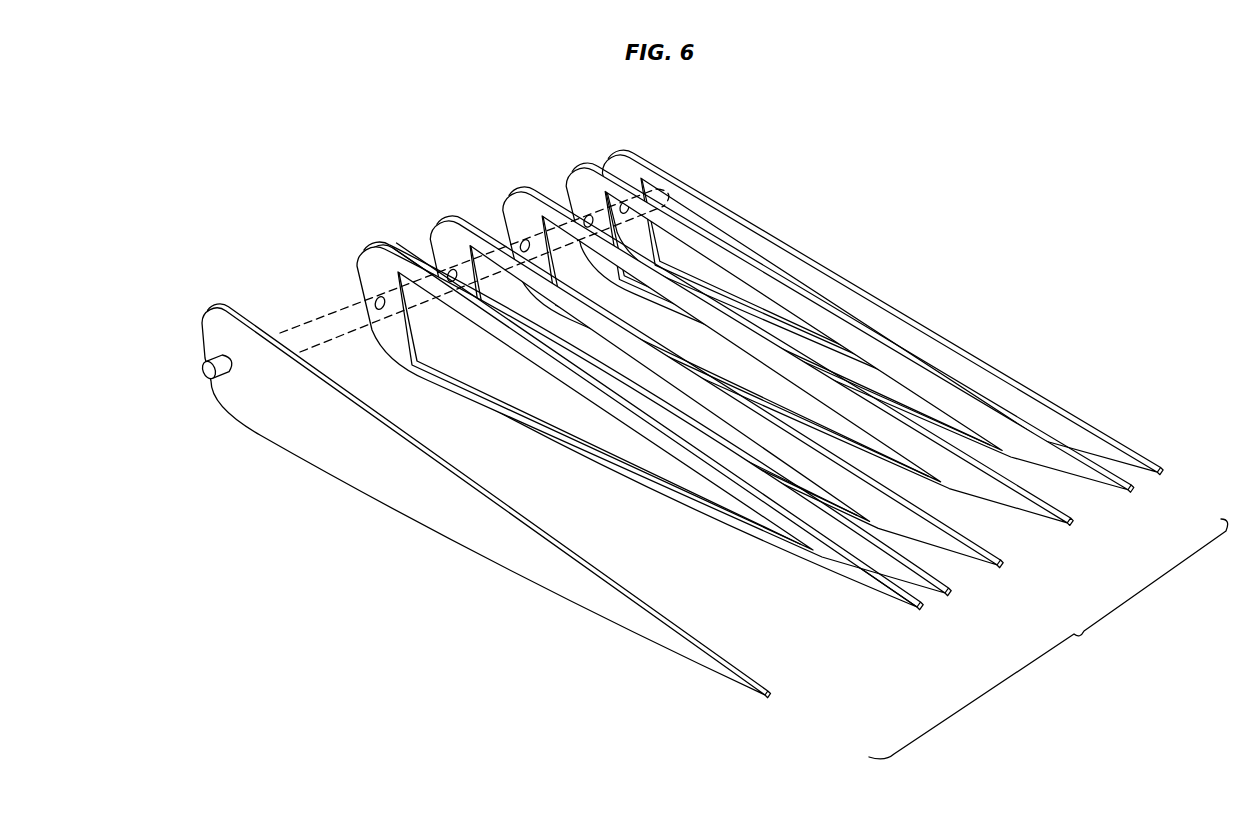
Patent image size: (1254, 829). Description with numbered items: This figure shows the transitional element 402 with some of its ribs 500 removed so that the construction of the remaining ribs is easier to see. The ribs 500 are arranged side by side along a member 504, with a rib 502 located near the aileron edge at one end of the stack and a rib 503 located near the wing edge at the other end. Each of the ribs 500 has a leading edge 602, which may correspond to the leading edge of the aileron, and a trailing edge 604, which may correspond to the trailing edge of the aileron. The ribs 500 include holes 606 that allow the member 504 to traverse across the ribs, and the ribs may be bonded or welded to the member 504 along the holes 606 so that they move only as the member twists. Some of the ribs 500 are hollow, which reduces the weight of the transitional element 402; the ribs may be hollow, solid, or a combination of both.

The transitional element 402 is at (780, 140).
The ribs 500 is at (1048, 639).
The rib 502 is at (1116, 443).
The rib 503 is at (738, 670).
The member 504 is at (203, 325).
The leading edge 602 is at (355, 254).
The trailing edge 604 is at (1003, 572).
The holes 606 is at (503, 217).